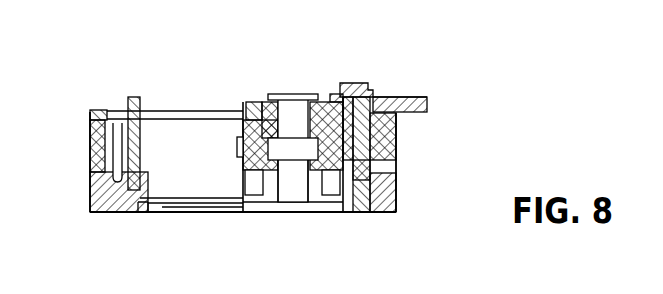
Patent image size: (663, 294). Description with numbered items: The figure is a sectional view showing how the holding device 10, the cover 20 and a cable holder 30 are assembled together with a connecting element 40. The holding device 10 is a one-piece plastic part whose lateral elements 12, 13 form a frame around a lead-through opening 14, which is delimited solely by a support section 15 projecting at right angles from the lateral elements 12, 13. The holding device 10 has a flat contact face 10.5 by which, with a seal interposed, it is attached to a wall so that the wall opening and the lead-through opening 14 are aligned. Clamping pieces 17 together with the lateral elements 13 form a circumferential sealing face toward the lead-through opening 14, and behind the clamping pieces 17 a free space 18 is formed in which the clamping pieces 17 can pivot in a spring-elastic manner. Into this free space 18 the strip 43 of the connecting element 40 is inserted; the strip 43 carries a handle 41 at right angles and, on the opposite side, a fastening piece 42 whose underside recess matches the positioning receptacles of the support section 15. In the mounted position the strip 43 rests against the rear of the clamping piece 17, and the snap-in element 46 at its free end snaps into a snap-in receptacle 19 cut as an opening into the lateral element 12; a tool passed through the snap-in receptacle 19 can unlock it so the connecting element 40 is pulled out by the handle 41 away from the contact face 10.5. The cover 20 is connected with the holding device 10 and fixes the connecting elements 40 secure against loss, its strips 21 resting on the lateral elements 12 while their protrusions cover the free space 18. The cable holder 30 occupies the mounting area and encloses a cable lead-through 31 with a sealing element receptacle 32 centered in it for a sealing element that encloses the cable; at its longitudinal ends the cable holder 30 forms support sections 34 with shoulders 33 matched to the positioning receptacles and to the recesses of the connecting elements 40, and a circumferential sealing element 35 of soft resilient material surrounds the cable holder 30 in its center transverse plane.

The holding device 10 is at (74, 207).
The contact face 10.5 is at (101, 213).
The lateral element 12 is at (90, 127).
The lateral element 13 is at (166, 134).
The lead-through opening 14 is at (187, 212).
The support section 15 is at (141, 213).
The clamping piece 17 is at (374, 94).
The free space 18 is at (90, 145).
The snap-in receptacle 19 is at (386, 163).
The cover 20 is at (100, 108).
The strip 21 is at (93, 109).
The cable holder 30 is at (297, 95).
The cable lead-through 31 is at (300, 190).
The sealing element receptacle 32 is at (265, 200).
The shoulder 33 is at (252, 101).
The support section 34 is at (336, 96).
The circumferential sealing element 35 is at (243, 148).
The connecting element 40 is at (433, 96).
The handle 41 is at (430, 105).
The fastening piece 42 is at (360, 83).
The strip 43 is at (395, 140).
The snap-in element 46 is at (372, 213).